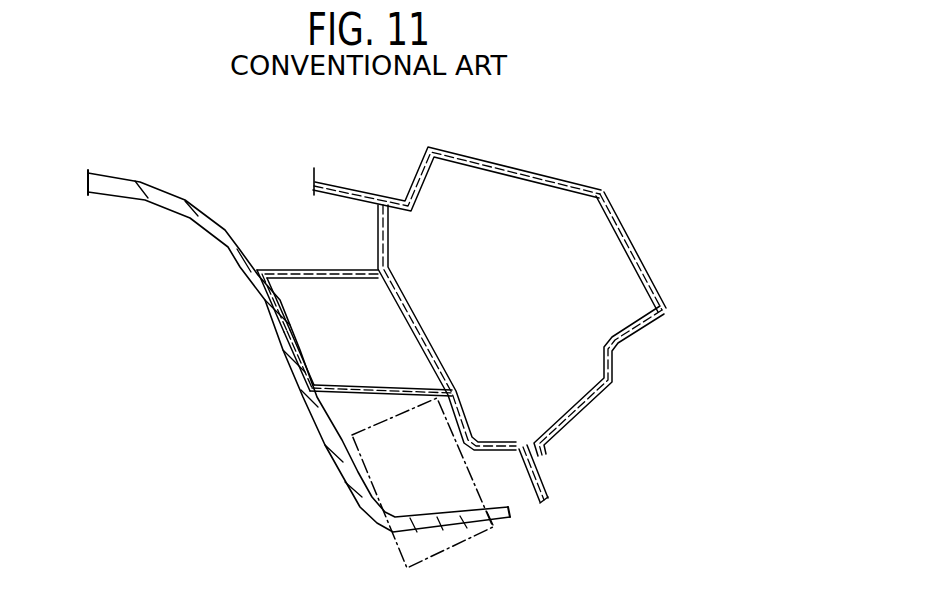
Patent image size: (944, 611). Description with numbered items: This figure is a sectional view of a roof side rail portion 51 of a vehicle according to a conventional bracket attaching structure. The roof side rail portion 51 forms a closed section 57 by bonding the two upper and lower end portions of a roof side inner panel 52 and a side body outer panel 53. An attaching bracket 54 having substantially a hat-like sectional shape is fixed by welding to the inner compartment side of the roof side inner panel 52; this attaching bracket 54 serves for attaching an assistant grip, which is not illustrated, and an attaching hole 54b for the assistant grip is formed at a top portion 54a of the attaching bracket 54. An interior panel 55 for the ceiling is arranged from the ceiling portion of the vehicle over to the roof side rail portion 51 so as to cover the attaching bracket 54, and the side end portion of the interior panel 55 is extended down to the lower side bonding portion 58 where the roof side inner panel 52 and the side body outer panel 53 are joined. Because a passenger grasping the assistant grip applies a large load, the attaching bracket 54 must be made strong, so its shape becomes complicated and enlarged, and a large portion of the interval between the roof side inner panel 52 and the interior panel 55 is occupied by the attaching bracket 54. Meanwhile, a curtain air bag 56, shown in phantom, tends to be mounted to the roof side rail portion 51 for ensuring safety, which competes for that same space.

The roof side rail portion 51 is at (548, 155).
The roof side inner panel 52 is at (410, 318).
The side body outer panel 53 is at (660, 290).
The attaching bracket 54 is at (293, 270).
The top portion 54a is at (297, 358).
The attaching hole 54b is at (282, 327).
The interior panel 55 is at (172, 197).
The curtain air bag 56 is at (400, 553).
The closed section 57 is at (554, 312).
The lower side bonding portion 58 is at (543, 470).